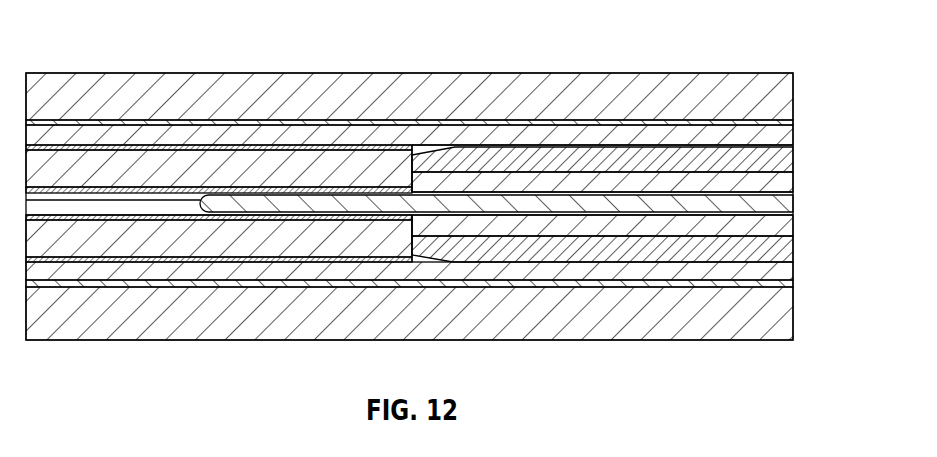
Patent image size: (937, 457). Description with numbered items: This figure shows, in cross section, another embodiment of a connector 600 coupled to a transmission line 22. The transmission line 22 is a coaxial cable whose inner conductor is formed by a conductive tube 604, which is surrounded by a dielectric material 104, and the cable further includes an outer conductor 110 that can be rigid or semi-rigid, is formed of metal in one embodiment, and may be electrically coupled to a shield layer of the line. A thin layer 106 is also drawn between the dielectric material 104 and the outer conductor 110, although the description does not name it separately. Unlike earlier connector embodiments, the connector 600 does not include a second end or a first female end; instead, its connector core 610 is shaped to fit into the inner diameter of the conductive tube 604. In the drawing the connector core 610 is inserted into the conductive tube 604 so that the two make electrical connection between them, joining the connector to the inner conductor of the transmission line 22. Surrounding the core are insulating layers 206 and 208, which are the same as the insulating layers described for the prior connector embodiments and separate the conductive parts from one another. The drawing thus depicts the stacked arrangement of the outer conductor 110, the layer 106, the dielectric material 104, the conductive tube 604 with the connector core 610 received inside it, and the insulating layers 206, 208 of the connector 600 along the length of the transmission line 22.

The transmission line 22 is at (180, 288).
The dielectric material 104 is at (363, 170).
The thin layer 106 is at (282, 148).
The outer conductor 110 is at (787, 133).
The insulating layer 206 is at (787, 183).
The insulating layer 208 is at (787, 159).
The connector 600 is at (639, 264).
The conductive tube 604 is at (170, 197).
The connector core 610 is at (790, 198).